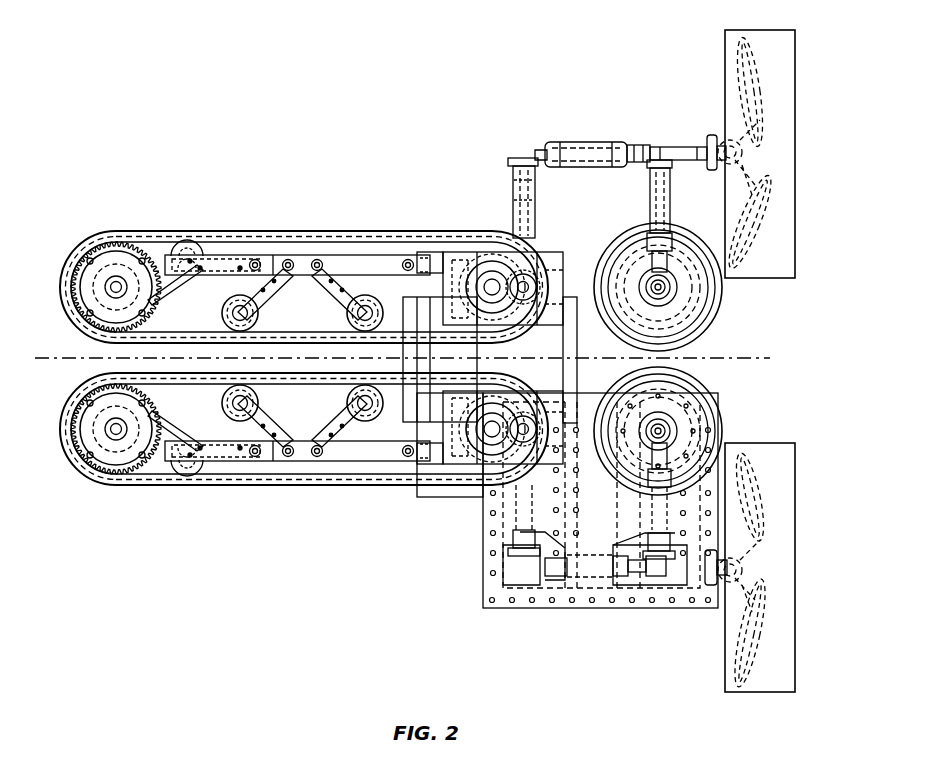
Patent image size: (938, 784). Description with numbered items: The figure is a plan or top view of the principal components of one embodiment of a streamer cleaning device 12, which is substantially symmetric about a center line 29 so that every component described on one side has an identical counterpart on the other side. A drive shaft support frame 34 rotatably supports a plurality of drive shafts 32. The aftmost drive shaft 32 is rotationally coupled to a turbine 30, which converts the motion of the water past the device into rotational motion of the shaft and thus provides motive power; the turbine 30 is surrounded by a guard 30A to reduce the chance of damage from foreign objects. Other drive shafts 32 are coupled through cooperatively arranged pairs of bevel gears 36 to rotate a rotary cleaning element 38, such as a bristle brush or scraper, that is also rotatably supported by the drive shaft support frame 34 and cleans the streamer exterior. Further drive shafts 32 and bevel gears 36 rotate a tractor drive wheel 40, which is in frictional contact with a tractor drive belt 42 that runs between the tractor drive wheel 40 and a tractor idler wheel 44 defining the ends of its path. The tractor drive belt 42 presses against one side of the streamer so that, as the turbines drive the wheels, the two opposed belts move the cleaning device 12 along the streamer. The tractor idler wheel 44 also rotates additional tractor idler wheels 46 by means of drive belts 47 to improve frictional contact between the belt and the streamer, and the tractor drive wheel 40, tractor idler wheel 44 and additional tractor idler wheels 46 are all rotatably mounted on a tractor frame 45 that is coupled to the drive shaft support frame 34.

The streamer cleaning device 12 is at (354, 138).
The center line 29 is at (755, 358).
The turbine 30 is at (768, 80).
The guard 30A is at (760, 30).
The drive shaft 32 is at (590, 142).
The drive shaft support frame 34 is at (518, 610).
The bevel gears 36 is at (535, 148).
The rotary cleaning element 38 is at (718, 318).
The tractor drive wheel 40 is at (483, 230).
The tractor drive belt 42 is at (200, 238).
The tractor idler wheel 44 is at (150, 256).
The tractor frame 45 is at (335, 252).
The additional tractor idler wheels 46 is at (348, 314).
The drive belts 47 is at (158, 304).